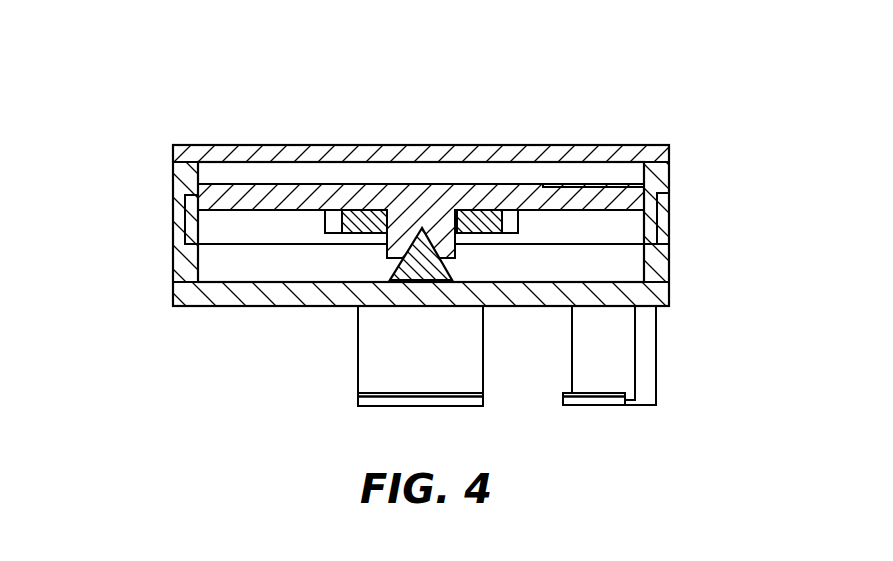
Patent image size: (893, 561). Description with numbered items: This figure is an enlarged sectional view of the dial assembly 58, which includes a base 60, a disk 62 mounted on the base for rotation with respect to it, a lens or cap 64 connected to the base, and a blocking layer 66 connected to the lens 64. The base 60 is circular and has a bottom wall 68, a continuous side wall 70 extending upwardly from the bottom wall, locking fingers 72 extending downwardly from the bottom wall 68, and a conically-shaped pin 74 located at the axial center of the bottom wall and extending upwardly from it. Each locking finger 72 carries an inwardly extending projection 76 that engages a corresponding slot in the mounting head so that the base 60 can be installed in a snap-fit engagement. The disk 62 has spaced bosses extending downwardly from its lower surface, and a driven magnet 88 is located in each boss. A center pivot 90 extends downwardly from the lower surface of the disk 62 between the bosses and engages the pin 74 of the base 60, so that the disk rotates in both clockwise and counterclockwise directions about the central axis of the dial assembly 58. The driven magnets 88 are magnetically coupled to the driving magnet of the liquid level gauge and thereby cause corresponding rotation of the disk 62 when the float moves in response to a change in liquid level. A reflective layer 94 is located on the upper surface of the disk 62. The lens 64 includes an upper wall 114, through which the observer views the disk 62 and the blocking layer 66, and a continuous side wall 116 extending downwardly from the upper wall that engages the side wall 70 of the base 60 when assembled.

The dial assembly 58 is at (148, 117).
The base 60 is at (669, 250).
The disk 62 is at (315, 188).
The lens 64 is at (669, 167).
The blocking layer 66 is at (415, 150).
The bottom wall 68 is at (218, 298).
The side wall 70 is at (177, 262).
The locking fingers 72 is at (370, 365).
The pin 74 is at (443, 258).
The projection 76 is at (413, 400).
The driven magnet 88 is at (348, 236).
The center pivot 90 is at (402, 232).
The reflective layer 94 is at (580, 186).
The upper wall 114 is at (258, 145).
The side wall 116 is at (177, 173).